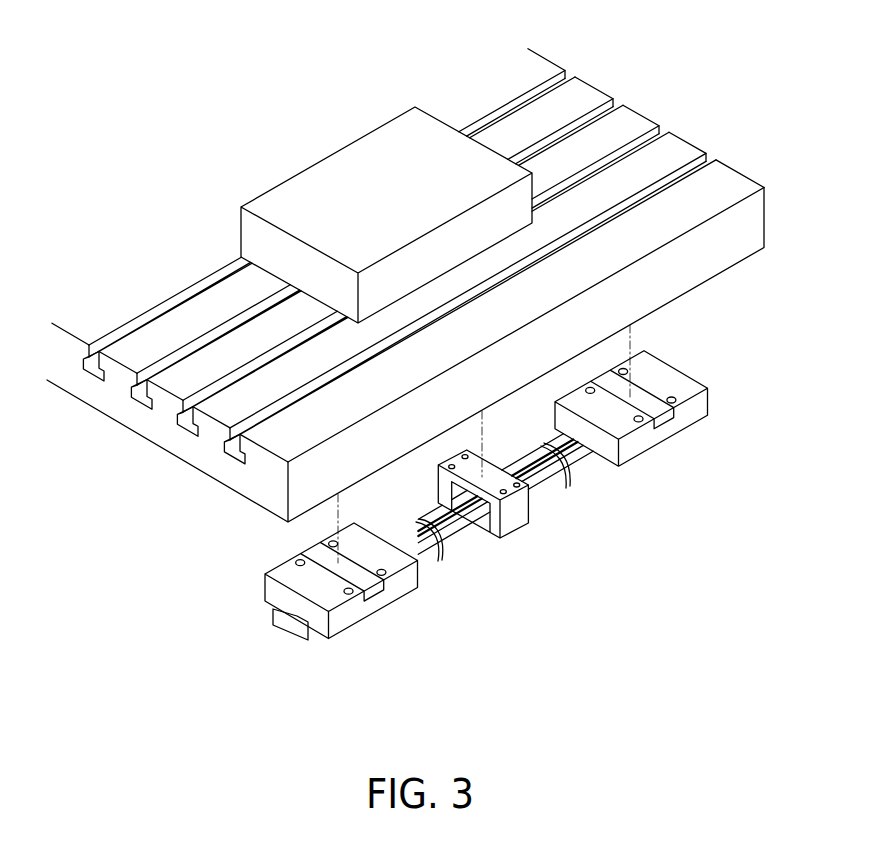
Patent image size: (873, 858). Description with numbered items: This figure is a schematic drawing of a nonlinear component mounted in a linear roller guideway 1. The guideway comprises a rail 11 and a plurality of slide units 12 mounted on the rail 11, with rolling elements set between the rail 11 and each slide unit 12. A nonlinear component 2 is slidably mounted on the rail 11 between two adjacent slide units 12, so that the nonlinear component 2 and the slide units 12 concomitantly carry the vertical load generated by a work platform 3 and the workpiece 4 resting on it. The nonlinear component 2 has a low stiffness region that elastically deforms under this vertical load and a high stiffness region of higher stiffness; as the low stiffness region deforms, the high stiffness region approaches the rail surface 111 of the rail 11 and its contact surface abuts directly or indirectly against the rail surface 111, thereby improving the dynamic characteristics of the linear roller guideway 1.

The linear roller guideway 1 is at (483, 527).
The rail 11 is at (543, 492).
The rail surface 111 is at (547, 463).
The slide unit 12 is at (697, 409).
The nonlinear component 2 is at (515, 532).
The work platform 3 is at (203, 308).
The workpiece 4 is at (342, 163).